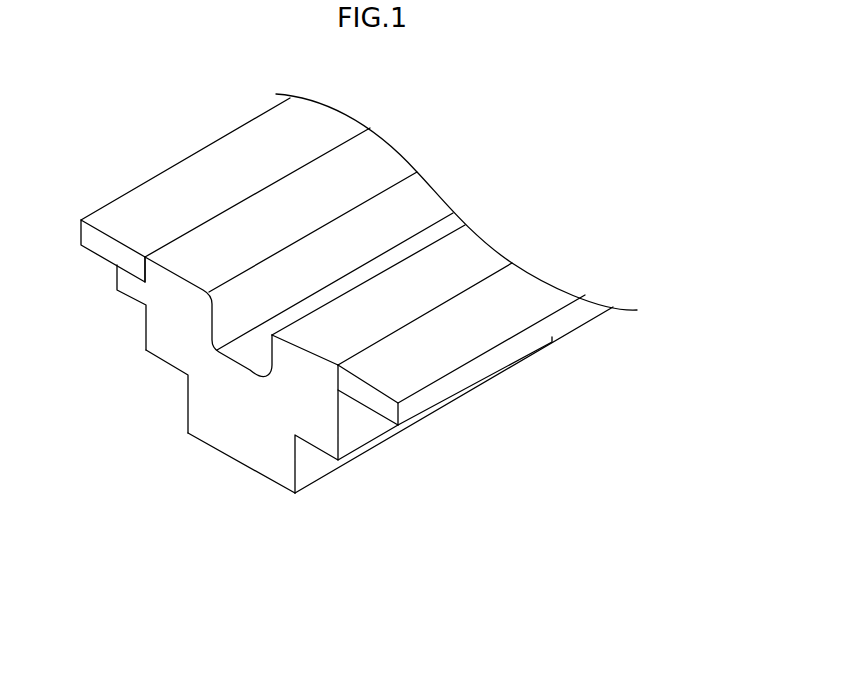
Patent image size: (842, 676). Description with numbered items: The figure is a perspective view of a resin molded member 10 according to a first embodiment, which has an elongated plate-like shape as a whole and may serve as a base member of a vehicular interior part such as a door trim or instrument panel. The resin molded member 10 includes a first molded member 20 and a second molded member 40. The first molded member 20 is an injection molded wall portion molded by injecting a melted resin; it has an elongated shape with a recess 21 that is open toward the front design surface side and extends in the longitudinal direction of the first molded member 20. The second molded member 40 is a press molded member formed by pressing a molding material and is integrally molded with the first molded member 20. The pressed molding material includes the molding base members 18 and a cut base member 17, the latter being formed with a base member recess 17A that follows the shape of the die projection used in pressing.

The resin molded member 10 is at (353, 390).
The cut base member 17 is at (288, 465).
The base member recess 17A is at (212, 397).
The molding base member 18 is at (158, 202).
The first molded member 20 is at (282, 357).
The recess 21 is at (238, 363).
The second molded member 40 is at (379, 457).